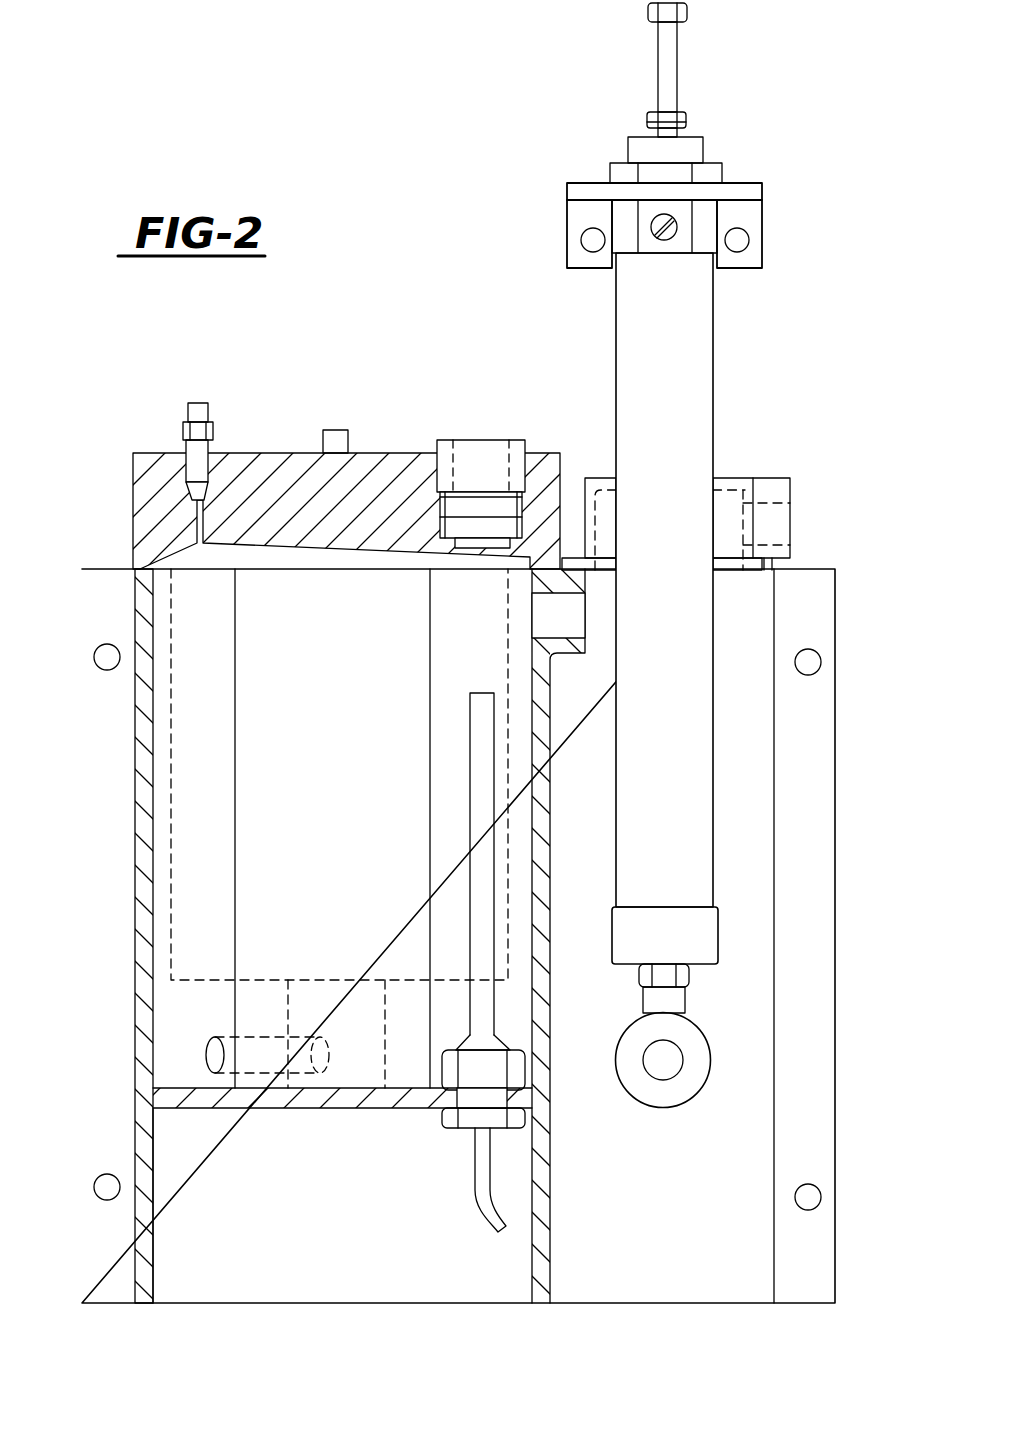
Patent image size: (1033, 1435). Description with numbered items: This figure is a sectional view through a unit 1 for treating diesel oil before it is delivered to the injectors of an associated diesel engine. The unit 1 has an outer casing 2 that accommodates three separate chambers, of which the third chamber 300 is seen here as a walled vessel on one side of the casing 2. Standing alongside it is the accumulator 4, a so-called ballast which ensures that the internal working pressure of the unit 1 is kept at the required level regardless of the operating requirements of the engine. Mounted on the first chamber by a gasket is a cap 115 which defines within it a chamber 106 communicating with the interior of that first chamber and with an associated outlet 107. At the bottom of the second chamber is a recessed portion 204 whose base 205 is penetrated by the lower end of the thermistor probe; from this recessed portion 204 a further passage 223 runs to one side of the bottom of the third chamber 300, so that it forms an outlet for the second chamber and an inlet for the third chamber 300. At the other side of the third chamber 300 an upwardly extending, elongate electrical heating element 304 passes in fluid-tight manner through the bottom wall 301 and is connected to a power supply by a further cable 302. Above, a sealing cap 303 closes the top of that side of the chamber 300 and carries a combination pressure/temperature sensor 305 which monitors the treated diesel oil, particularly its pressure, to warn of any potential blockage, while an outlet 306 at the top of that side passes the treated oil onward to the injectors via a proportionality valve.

The unit 1 is at (467, 666).
The outer casing 2 is at (826, 778).
The accumulator 4 is at (698, 410).
The chamber 106 is at (600, 500).
The outlet 107 is at (793, 530).
The cap 115 is at (737, 484).
The recessed portion 204 is at (375, 1047).
The base 205 is at (313, 1088).
The further passage 223 is at (272, 1062).
The third chamber 300 is at (160, 905).
The bottom wall 301 is at (433, 1106).
The further cable 302 is at (490, 1185).
The sealing cap 303 is at (268, 455).
The electrical heating element 304 is at (480, 829).
The combination pressure/temperature sensor 305 is at (483, 527).
The outlet 306 is at (563, 633).